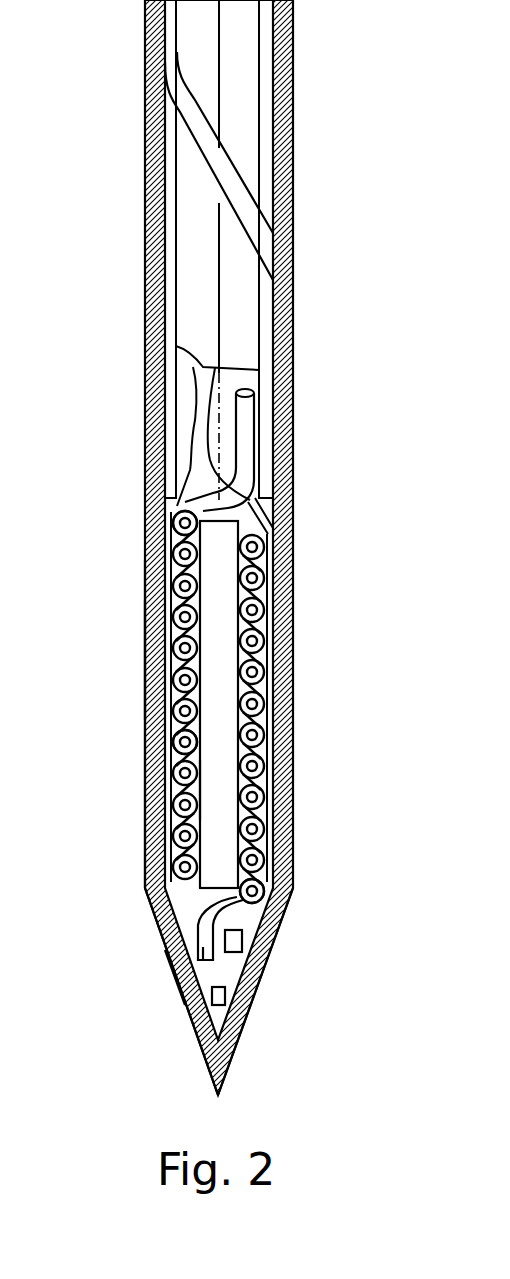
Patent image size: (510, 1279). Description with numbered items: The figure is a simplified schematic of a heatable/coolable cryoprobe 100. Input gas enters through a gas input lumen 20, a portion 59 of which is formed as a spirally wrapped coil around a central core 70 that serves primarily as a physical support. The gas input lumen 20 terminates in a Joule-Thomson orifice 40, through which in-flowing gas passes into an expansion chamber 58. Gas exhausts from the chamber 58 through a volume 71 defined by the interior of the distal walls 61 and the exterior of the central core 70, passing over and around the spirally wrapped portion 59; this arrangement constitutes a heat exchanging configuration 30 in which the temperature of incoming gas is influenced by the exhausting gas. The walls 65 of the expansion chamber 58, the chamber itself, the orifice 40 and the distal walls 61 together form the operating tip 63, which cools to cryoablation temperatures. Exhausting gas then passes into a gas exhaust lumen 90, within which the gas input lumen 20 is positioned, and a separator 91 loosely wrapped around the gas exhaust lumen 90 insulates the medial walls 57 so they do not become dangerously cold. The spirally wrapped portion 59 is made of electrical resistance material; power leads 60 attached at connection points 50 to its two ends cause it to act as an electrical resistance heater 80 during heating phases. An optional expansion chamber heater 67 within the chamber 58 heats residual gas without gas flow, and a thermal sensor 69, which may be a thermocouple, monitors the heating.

The cryoprobe 100 is at (140, 641).
The medial walls 57 is at (148, 195).
The gas exhaust lumen 90 is at (243, 85).
The separator 91 is at (243, 209).
The power leads 60 is at (190, 428).
The gas input lumen 20 is at (248, 436).
The connection points 50 is at (170, 508).
The volume 71 is at (170, 675).
The distal walls 61 is at (152, 718).
The electrical resistance heater 80 is at (175, 744).
The central core 70 is at (210, 788).
The spirally wrapped portion 59 is at (262, 680).
The heat exchanging configuration 30 is at (262, 792).
The walls of expansion chamber 65 is at (193, 965).
The expansion chamber heater 67 is at (237, 942).
The Joule-Thomson orifice 40 is at (185, 975).
The expansion chamber 58 is at (228, 997).
The operating tip 63 is at (190, 1023).
The thermal sensor 69 is at (245, 1007).